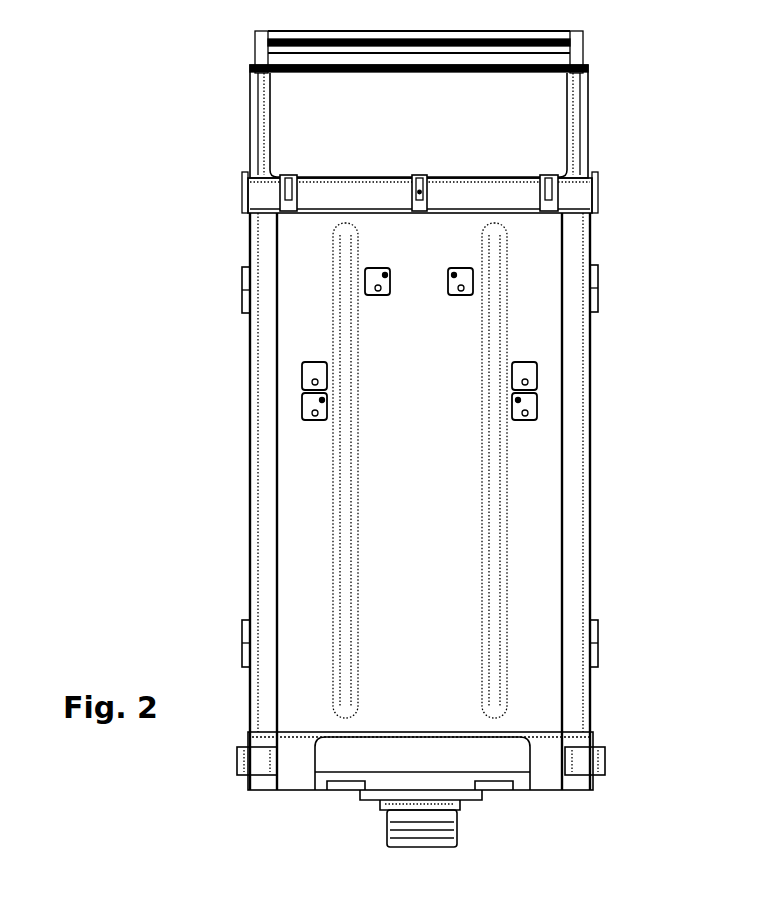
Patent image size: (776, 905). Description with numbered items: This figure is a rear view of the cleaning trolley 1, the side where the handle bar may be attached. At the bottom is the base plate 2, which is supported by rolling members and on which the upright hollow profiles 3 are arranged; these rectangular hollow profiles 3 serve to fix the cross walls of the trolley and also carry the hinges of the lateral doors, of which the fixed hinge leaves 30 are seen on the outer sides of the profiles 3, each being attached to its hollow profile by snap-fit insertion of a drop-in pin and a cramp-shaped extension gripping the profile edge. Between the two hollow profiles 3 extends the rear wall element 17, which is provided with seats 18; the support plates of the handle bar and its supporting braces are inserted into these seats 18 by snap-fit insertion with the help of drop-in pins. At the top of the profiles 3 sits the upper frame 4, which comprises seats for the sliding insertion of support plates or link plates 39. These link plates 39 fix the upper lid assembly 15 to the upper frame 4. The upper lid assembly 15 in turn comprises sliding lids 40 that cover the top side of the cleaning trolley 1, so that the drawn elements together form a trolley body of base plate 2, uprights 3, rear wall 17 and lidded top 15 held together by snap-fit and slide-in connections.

The cleaning trolley 1 is at (172, 341).
The base plate 2 is at (293, 762).
The upright hollow profile 3 is at (265, 482).
The upper frame 4 is at (563, 198).
The upper lid assembly 15 is at (500, 136).
The wall element 17 is at (408, 527).
The seat 18 is at (325, 412).
The fixed hinge leaf 30 is at (598, 298).
The link plate 39 is at (290, 190).
The sliding lid 40 is at (285, 45).